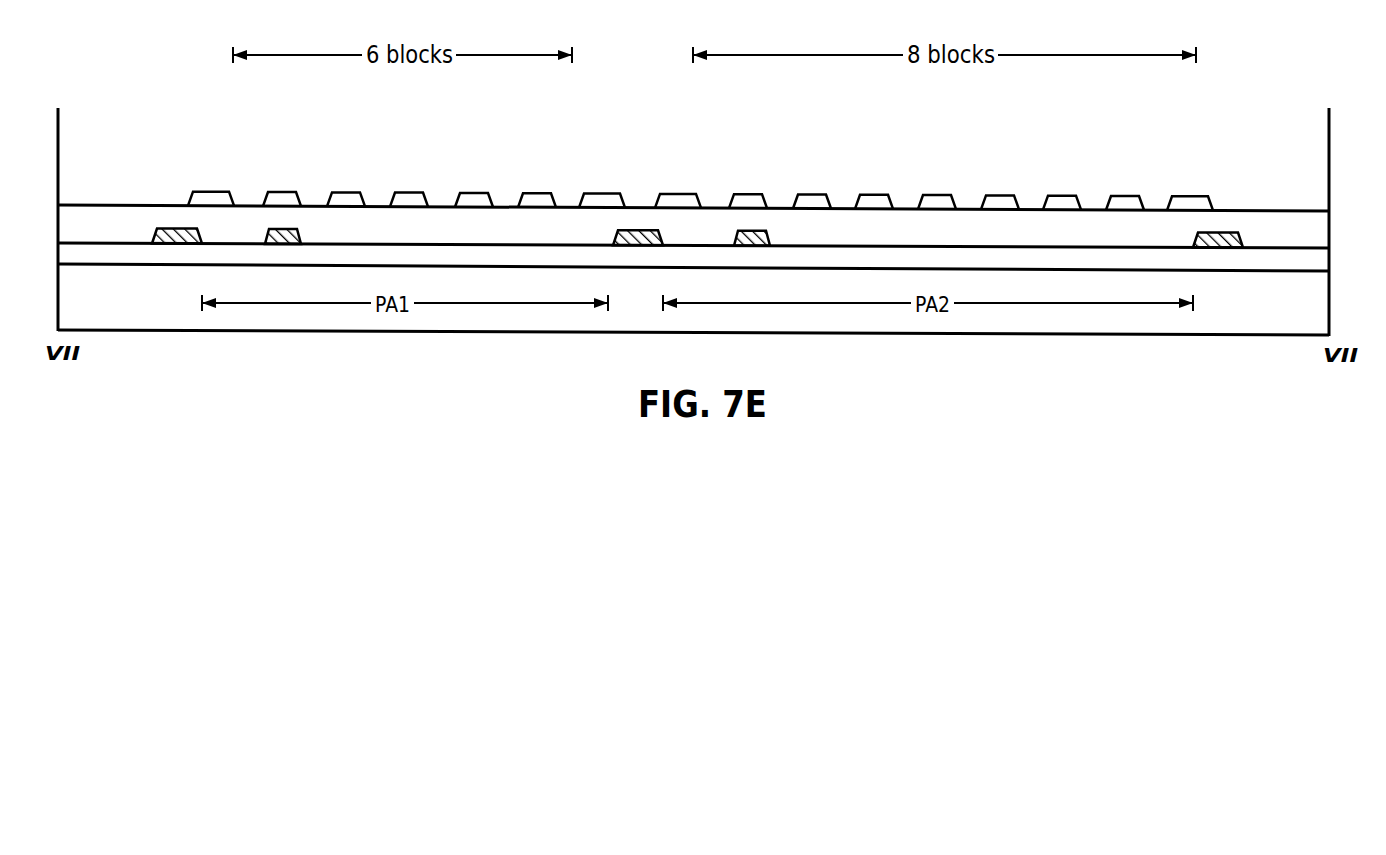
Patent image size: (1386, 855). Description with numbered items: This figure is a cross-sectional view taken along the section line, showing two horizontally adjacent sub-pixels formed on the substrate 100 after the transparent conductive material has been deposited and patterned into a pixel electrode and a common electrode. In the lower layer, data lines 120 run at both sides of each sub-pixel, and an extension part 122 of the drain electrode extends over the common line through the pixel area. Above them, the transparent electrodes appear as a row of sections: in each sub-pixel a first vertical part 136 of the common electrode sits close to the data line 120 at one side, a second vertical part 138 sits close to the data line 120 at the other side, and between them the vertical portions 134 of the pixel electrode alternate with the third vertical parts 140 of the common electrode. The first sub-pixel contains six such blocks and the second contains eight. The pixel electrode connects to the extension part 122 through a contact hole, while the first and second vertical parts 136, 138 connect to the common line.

The substrate 100 is at (1285, 314).
The data line 120 is at (173, 229).
The extension part 122 is at (279, 229).
The vertical portions 134 is at (284, 192).
The first vertical part 136 is at (212, 192).
The second vertical part 138 is at (602, 194).
The third vertical parts 140 is at (346, 192).